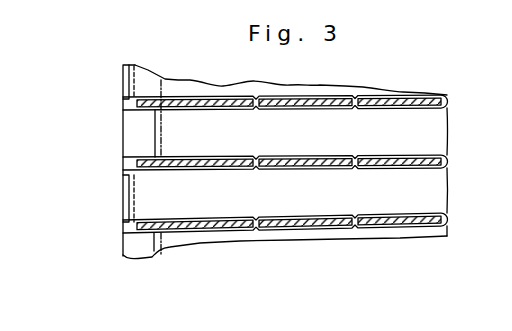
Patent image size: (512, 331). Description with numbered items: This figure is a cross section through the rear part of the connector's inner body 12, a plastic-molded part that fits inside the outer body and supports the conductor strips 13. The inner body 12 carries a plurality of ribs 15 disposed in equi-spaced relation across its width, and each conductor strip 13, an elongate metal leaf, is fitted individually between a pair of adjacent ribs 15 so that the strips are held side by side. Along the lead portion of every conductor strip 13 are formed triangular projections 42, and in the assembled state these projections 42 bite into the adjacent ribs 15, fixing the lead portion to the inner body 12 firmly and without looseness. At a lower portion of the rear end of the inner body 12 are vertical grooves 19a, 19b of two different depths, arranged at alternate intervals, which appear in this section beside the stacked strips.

The inner body 12 is at (137, 259).
The conductor strips 13 is at (440, 132).
The ribs 15 is at (423, 95).
The vertical groove 19a is at (128, 139).
The vertical groove 19b is at (123, 87).
The triangular projections 42 is at (256, 111).